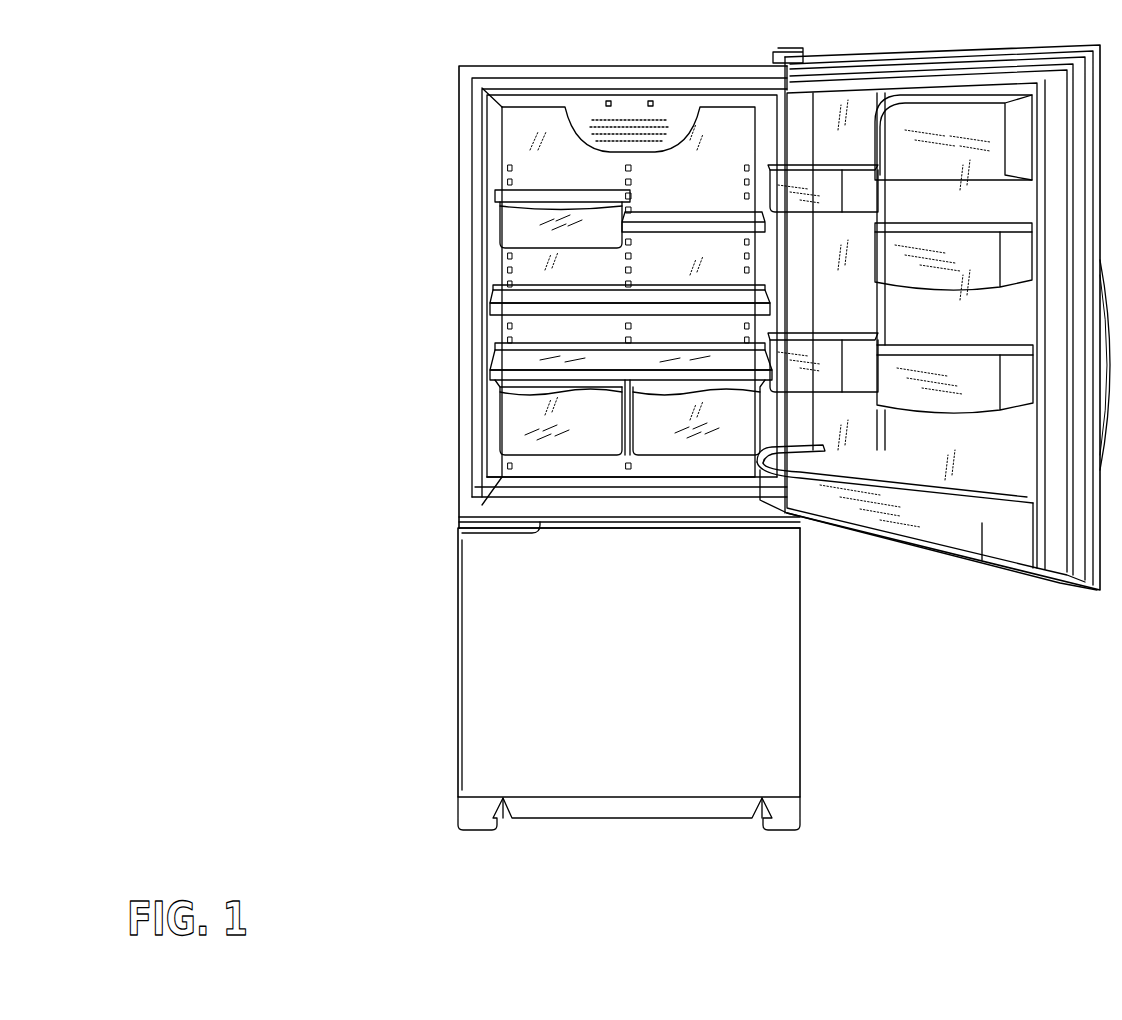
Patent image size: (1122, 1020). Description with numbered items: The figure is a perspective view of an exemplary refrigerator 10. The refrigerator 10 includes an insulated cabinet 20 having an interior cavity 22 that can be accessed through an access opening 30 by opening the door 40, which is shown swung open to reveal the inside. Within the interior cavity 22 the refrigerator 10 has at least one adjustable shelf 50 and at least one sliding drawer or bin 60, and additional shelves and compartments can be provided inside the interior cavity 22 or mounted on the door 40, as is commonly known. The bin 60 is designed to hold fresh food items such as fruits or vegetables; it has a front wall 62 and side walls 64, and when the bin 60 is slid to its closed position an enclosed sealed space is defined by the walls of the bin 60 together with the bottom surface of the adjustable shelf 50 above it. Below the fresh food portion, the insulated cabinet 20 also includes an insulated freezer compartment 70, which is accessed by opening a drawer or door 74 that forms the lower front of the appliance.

The refrigerator 10 is at (290, 140).
The insulated cabinet 20 is at (483, 243).
The interior cavity 22 is at (560, 143).
The access opening 30 is at (533, 482).
The door 40 is at (864, 52).
The adjustable shelf 50 is at (516, 313).
The sliding drawer or bin 60 is at (538, 417).
The front wall 62 is at (540, 447).
The side walls 64 is at (525, 384).
The insulated freezer compartment 70 is at (509, 626).
The drawer or door 74 is at (505, 685).